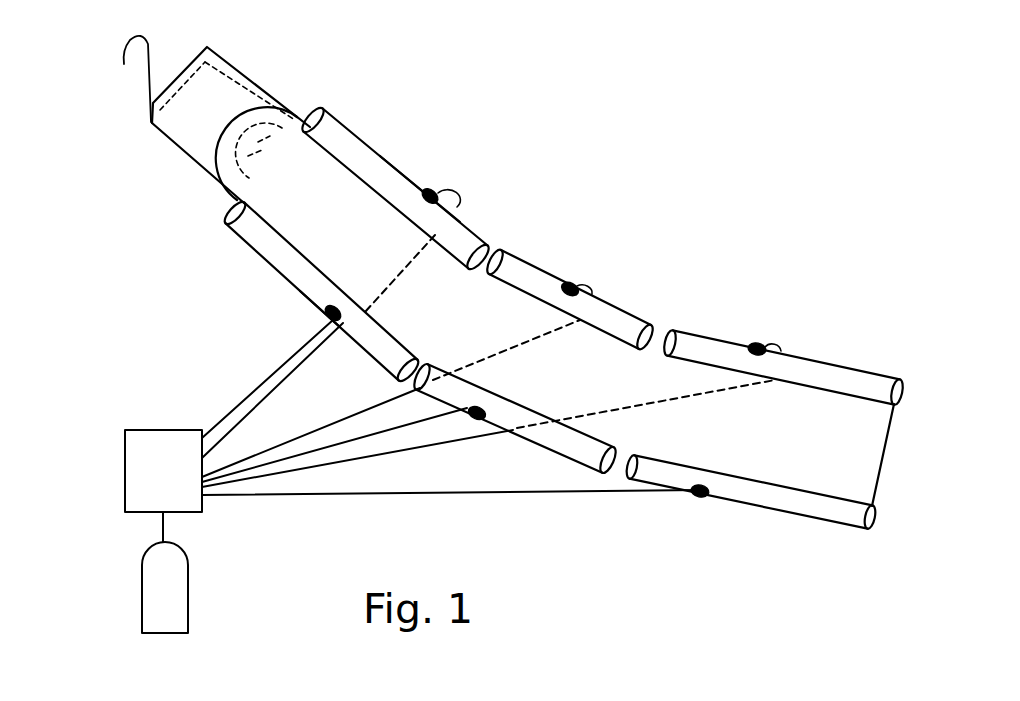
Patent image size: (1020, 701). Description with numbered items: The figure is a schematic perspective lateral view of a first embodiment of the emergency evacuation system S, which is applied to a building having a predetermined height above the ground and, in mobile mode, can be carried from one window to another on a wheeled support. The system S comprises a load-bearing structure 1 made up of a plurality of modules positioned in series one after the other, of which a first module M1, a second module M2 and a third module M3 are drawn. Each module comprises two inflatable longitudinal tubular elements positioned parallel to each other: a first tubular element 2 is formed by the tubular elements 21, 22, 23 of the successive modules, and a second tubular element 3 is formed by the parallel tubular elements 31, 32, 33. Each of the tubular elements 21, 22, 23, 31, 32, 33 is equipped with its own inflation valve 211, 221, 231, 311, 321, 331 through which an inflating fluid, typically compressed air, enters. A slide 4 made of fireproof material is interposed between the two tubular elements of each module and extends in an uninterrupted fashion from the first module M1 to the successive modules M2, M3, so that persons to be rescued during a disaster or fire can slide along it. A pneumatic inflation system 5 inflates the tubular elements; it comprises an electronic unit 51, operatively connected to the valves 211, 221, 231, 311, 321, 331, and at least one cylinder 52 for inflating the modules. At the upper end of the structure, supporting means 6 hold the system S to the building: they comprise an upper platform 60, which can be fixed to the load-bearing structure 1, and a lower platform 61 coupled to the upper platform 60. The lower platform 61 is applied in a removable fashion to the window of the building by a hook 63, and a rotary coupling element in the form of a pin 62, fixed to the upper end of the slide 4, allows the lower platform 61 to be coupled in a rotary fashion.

The emergency evacuation system S is at (708, 61).
The load-bearing structure 1 is at (544, 248).
The first inflatable longitudinal tubular element 2 is at (361, 106).
The inflatable longitudinal tubular element of first module 21 is at (419, 186).
The valve 211 is at (441, 191).
The inflatable longitudinal tubular element of second module 22 is at (614, 306).
The valve 221 is at (567, 283).
The inflatable longitudinal tubular element of third module 23 is at (803, 356).
The valve 231 is at (757, 343).
The second inflatable longitudinal tubular element 3 is at (240, 266).
The inflatable longitudinal tubular element of first module 31 is at (309, 296).
The valve 311 is at (328, 317).
The inflatable longitudinal tubular element of second module 32 is at (528, 439).
The valve 321 is at (475, 418).
The inflatable longitudinal tubular element of third module 33 is at (773, 510).
The valve 331 is at (700, 500).
The slide 4 is at (886, 457).
The pneumatic inflation system 5 is at (106, 493).
The electronic unit 51 is at (158, 430).
The cylinder 52 is at (142, 598).
The supporting means 6 is at (168, 165).
The upper platform 60 is at (292, 105).
The lower platform 61 is at (234, 70).
The pin 62 is at (258, 144).
The hook 63 is at (149, 40).
The first module M1 is at (416, 107).
The second module M2 is at (656, 301).
The third module M3 is at (885, 364).